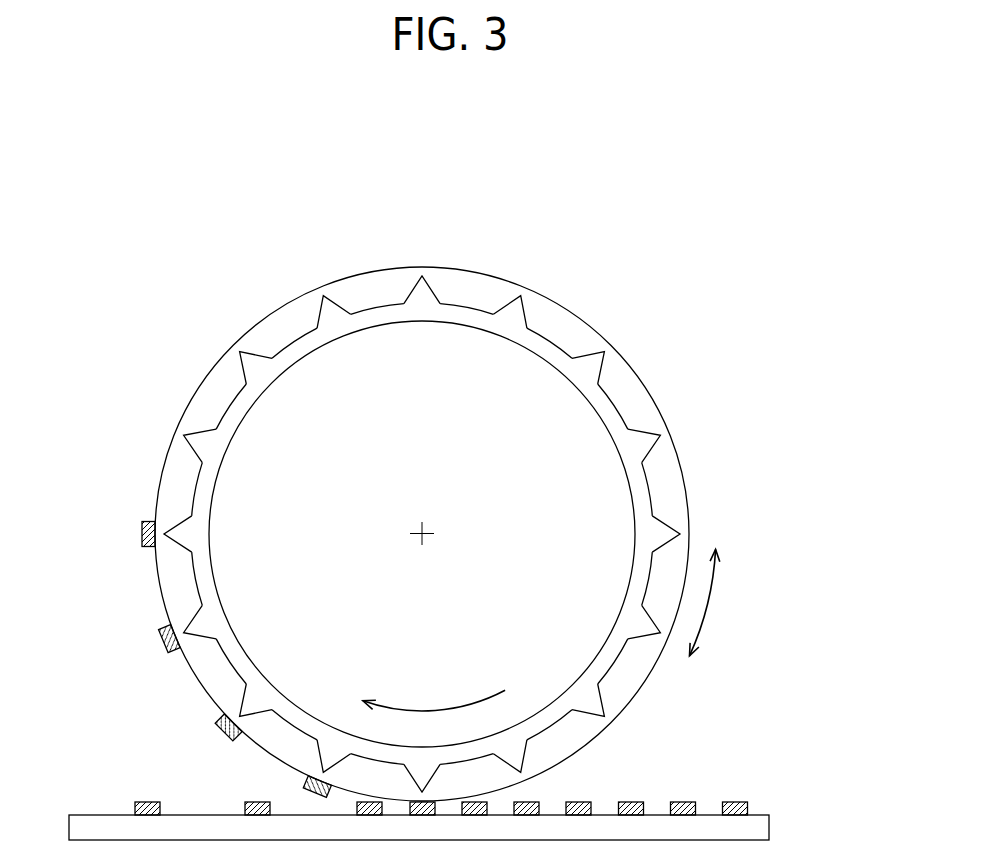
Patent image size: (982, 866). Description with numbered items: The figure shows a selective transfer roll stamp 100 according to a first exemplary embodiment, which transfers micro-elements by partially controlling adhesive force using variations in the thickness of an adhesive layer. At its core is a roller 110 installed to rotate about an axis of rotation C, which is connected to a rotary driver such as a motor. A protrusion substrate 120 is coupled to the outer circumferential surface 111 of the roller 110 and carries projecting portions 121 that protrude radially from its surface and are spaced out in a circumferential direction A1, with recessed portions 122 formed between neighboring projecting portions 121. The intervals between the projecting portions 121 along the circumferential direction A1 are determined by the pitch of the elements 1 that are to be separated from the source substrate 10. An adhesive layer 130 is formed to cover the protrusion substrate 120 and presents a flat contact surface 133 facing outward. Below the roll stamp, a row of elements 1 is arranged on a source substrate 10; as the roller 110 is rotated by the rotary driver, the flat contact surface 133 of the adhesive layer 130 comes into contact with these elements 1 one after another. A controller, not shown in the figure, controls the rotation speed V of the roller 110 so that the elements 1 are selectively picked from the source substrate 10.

The selective transfer roll stamp 100 is at (200, 318).
The roller 110 is at (468, 357).
The outer circumferential surface 111 is at (535, 352).
The protrusion substrate 120 is at (643, 513).
The projecting portions 121 is at (645, 442).
The recessed portions 122 is at (652, 488).
The adhesive layer 130 is at (635, 663).
The flat contact surface 133 is at (638, 692).
The elements 1 is at (143, 530).
The source substrate 10 is at (757, 822).
The axis of rotation C is at (427, 528).
The rotation speed V is at (463, 708).
The circumferential direction A1 is at (710, 606).